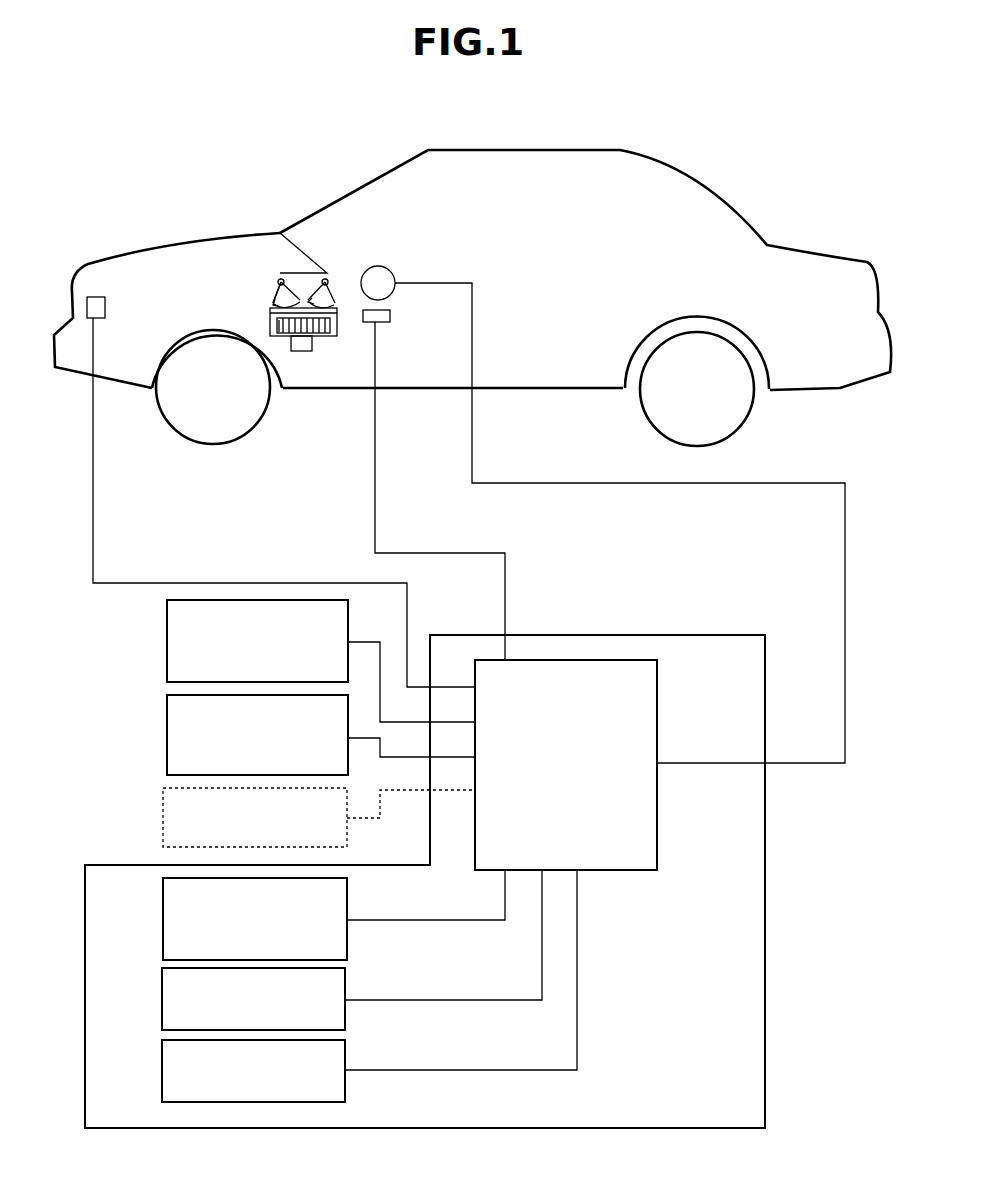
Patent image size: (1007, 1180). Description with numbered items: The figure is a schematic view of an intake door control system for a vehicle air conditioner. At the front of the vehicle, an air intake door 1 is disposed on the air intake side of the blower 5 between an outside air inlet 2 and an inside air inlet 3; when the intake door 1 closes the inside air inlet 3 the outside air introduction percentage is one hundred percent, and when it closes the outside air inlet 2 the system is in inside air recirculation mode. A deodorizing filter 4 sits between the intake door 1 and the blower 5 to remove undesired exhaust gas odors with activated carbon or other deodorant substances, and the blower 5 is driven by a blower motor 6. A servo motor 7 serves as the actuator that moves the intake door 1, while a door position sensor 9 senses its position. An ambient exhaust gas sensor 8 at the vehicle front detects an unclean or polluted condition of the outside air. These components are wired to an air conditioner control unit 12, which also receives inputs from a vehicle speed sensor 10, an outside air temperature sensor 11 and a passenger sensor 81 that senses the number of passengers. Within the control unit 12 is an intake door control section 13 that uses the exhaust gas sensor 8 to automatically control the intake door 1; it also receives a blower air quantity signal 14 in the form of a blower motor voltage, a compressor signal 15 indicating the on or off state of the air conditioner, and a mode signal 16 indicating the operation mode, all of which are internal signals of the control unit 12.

The air intake door 1 is at (320, 300).
The outside air inlet 2 is at (271, 245).
The inside air inlet 3 is at (273, 293).
The deodorizing filter 4 is at (328, 322).
The blower 5 is at (280, 330).
The blower motor 6 is at (309, 350).
The servo motor 7 is at (394, 270).
The ambient exhaust gas sensor 8 is at (104, 296).
The door position sensor 9 is at (391, 320).
The vehicle speed sensor 10 is at (167, 655).
The outside air temperature sensor 11 is at (167, 750).
The air conditioner control unit 12 is at (698, 635).
The intake door control section 13 is at (620, 660).
The blower air quantity signal 14 is at (163, 935).
The compressor signal 15 is at (162, 996).
The mode signal 16 is at (162, 1066).
The passenger sensor 81 is at (163, 818).